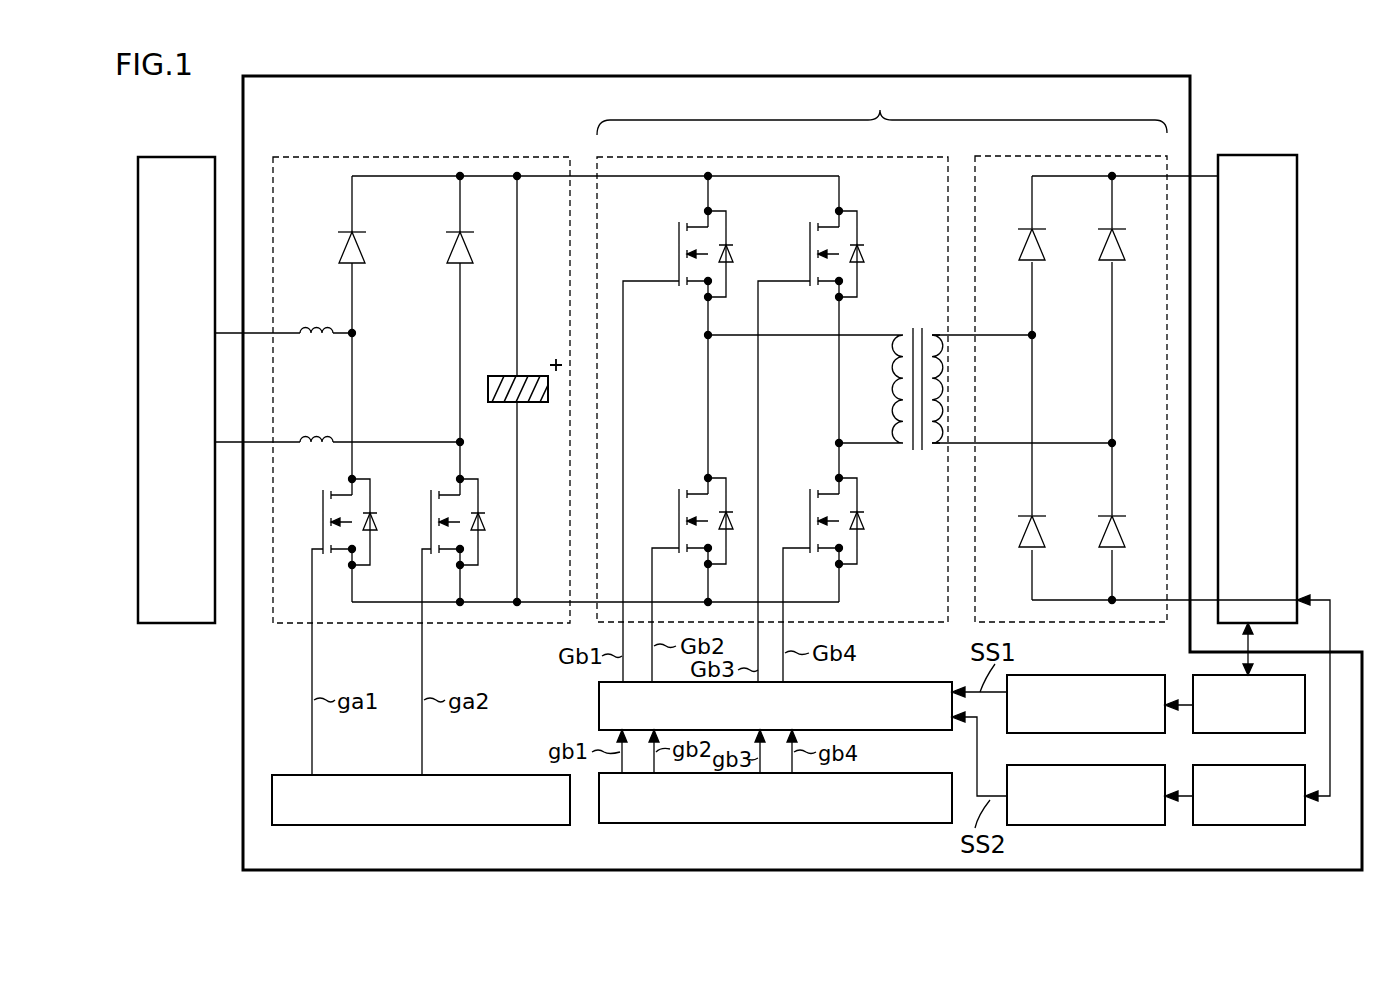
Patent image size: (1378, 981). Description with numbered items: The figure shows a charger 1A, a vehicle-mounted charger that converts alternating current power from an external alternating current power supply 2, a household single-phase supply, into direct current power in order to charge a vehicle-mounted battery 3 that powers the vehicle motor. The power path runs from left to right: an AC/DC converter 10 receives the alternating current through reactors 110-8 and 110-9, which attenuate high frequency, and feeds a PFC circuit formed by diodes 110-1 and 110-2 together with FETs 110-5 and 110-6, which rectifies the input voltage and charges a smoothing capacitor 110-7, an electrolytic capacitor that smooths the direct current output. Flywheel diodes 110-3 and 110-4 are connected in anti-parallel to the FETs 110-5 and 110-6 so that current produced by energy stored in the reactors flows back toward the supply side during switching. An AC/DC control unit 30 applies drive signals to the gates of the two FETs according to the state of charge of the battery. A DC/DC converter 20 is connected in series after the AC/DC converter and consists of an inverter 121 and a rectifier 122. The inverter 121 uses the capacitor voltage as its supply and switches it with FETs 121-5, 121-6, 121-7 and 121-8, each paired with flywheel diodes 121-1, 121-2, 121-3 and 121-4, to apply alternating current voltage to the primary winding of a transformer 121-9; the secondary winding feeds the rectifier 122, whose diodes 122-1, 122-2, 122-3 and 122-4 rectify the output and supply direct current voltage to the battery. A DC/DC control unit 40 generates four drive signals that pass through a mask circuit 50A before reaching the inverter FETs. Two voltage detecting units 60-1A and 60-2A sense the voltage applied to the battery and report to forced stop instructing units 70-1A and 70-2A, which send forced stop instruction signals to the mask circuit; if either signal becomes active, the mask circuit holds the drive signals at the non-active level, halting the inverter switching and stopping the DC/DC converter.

The charger 1A is at (243, 758).
The external alternating current power supply 2 is at (177, 157).
The vehicle-mounted battery 3 is at (1258, 155).
The AC/DC converter 10 is at (440, 157).
The DC/DC converter 20 is at (882, 109).
The inverter 121 is at (825, 157).
The rectifier 122 is at (1048, 156).
The diode 110-1 is at (356, 265).
The diode 110-2 is at (452, 248).
The flywheel diode 110-3 is at (375, 533).
The flywheel diode 110-4 is at (484, 533).
The FET 110-5 is at (336, 489).
The FET 110-6 is at (445, 489).
The smoothing capacitor 110-7 is at (488, 389).
The reactor 110-8 is at (306, 323).
The reactor 110-9 is at (306, 432).
The flywheel diode 121-1 is at (729, 256).
The flywheel diode 121-2 is at (729, 525).
The flywheel diode 121-3 is at (862, 259).
The flywheel diode 121-4 is at (862, 526).
The FET 121-5 is at (680, 246).
The FET 121-6 is at (683, 480).
The FET 121-7 is at (811, 246).
The FET 121-8 is at (815, 480).
The transformer 121-9 is at (916, 326).
The diode 122-1 is at (1044, 256).
The diode 122-2 is at (1044, 516).
The diode 122-3 is at (1110, 265).
The diode 122-4 is at (1110, 546).
The AC/DC control unit 30 is at (517, 825).
The DC/DC control unit 40 is at (845, 823).
The mask circuit 50A is at (900, 682).
The voltage detecting unit 60-1A is at (1218, 733).
The voltage detecting unit 60-2A is at (1218, 825).
The forced stop instructing unit 70-1A is at (1065, 675).
The forced stop instructing unit 70-2A is at (1062, 825).